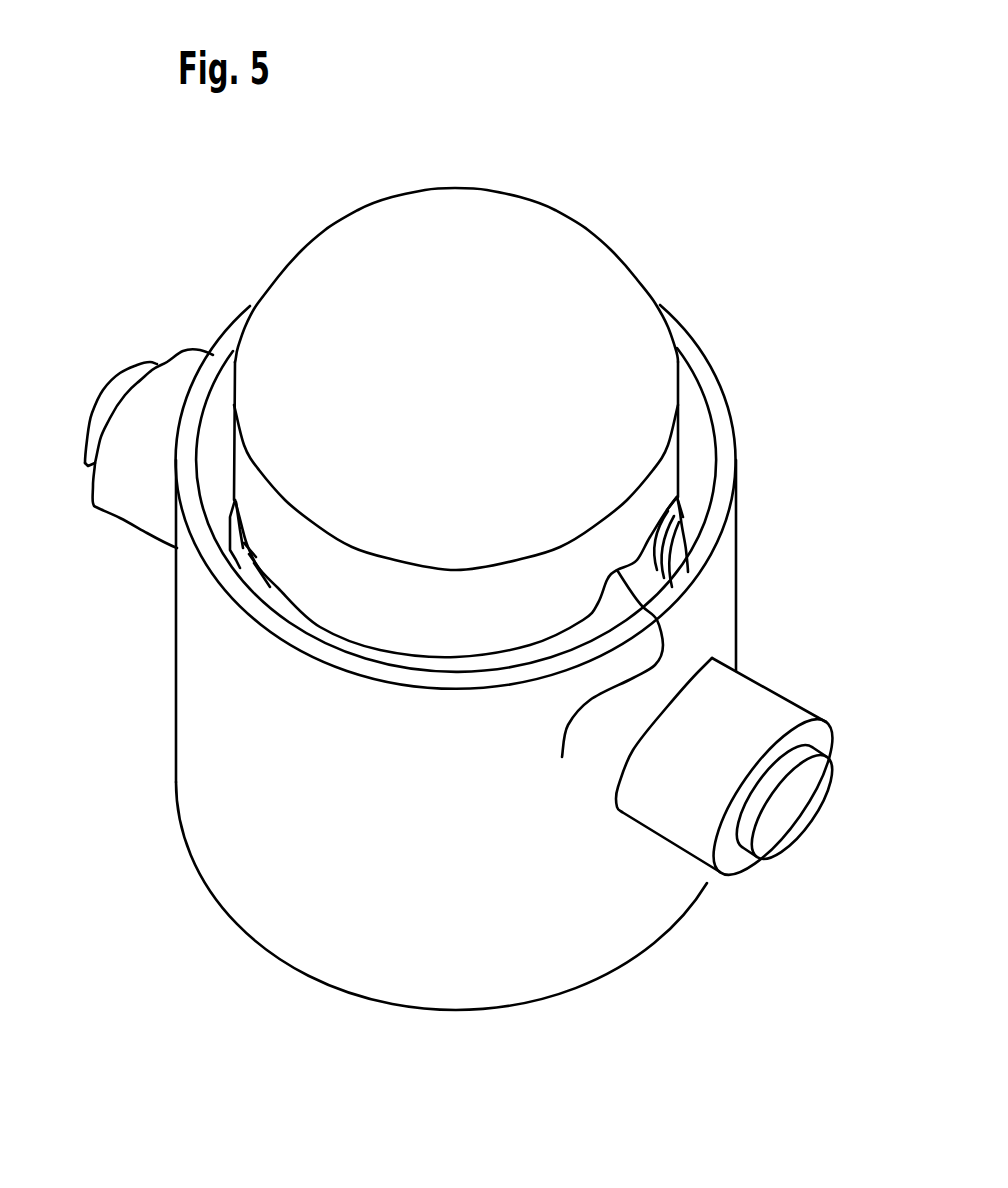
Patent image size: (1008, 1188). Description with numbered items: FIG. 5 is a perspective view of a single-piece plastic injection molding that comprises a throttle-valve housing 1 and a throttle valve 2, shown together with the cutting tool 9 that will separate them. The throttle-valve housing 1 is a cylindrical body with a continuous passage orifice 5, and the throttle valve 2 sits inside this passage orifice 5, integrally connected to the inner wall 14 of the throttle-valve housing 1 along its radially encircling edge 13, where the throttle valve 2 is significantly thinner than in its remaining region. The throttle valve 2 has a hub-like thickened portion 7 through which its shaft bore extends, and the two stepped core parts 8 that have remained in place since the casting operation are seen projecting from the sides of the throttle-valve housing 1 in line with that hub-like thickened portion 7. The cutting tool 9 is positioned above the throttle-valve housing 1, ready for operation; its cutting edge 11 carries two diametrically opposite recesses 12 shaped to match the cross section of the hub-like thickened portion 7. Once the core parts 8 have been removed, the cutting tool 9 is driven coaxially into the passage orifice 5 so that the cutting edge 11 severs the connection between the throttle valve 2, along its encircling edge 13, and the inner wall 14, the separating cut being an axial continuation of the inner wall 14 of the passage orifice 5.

The throttle-valve housing 1 is at (710, 617).
The throttle valve 2 is at (643, 567).
The passage orifice 5 is at (217, 465).
The hub-like thickened portion 7 is at (484, 668).
The core parts 8 is at (780, 833).
The cutting tool 9 is at (503, 235).
The cutting edge 11 is at (287, 600).
The recesses 12 is at (603, 683).
The encircling edge 13 is at (668, 560).
The inner wall 14 is at (695, 438).